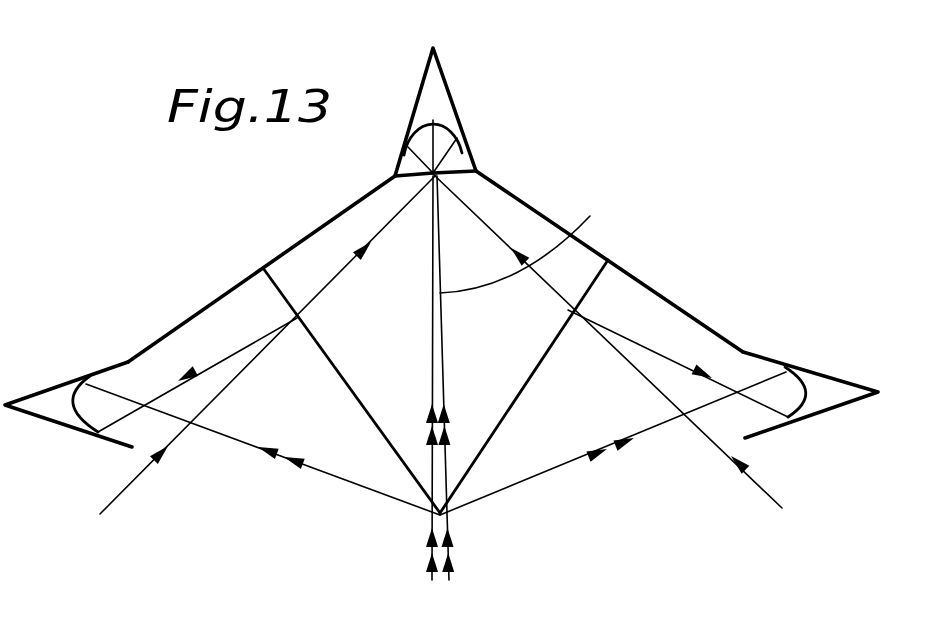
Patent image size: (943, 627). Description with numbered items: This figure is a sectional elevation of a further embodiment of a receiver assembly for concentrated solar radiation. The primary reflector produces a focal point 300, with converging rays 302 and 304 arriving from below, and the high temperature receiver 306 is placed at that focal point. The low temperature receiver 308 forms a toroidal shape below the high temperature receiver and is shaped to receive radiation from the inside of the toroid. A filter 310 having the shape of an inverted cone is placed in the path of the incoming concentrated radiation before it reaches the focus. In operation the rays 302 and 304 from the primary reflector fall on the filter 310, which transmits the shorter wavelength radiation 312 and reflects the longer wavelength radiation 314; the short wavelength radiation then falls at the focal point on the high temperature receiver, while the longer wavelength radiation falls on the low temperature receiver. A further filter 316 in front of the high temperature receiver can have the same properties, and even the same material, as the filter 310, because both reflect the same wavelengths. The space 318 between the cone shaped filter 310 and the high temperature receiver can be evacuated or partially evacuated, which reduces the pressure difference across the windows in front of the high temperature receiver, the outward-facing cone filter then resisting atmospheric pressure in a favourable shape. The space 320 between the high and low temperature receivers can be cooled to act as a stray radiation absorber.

The focal point 300 is at (477, 170).
The ray 302 is at (769, 496).
The ray 304 is at (425, 581).
The high temperature receiver 306 is at (444, 78).
The low temperature receiver 308 is at (63, 380).
The filter 310 is at (367, 415).
The shorter wavelength radiation 312 is at (388, 222).
The longer wavelength radiation 314 is at (160, 390).
The filter 316 is at (447, 136).
The space 318 is at (363, 311).
The space 320 is at (215, 300).